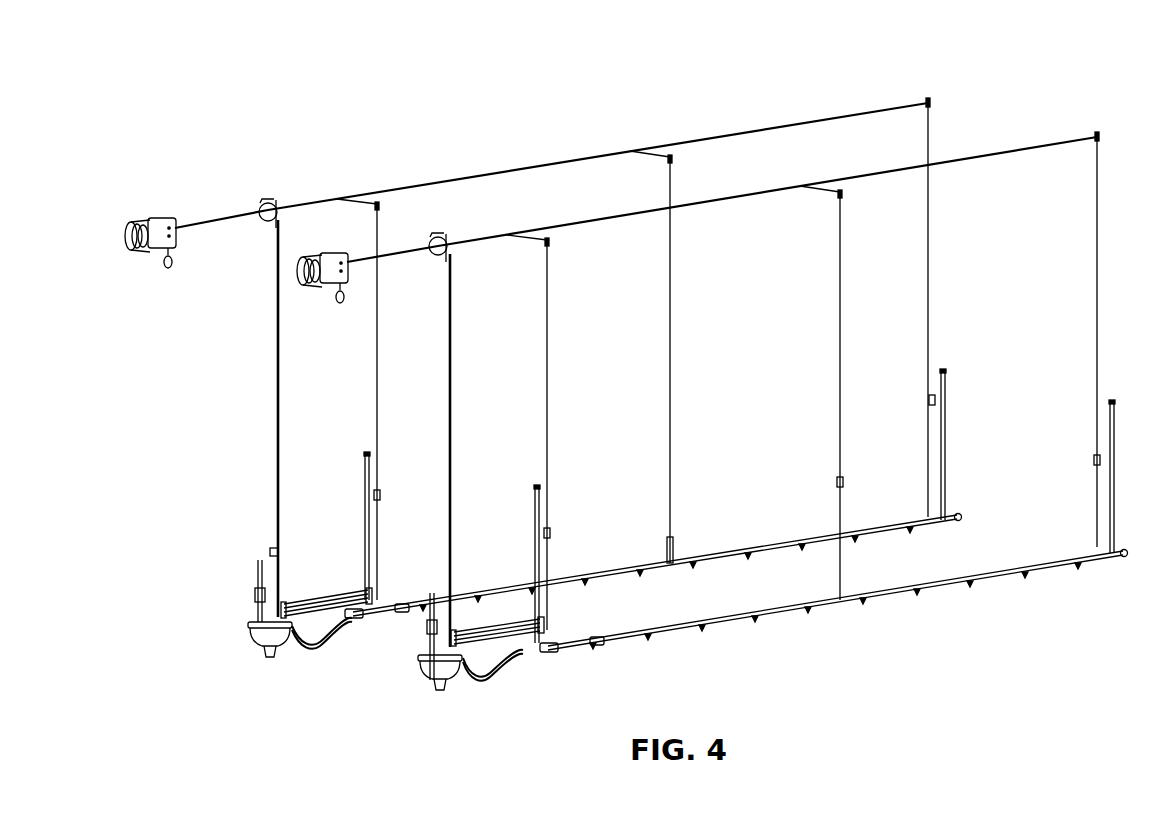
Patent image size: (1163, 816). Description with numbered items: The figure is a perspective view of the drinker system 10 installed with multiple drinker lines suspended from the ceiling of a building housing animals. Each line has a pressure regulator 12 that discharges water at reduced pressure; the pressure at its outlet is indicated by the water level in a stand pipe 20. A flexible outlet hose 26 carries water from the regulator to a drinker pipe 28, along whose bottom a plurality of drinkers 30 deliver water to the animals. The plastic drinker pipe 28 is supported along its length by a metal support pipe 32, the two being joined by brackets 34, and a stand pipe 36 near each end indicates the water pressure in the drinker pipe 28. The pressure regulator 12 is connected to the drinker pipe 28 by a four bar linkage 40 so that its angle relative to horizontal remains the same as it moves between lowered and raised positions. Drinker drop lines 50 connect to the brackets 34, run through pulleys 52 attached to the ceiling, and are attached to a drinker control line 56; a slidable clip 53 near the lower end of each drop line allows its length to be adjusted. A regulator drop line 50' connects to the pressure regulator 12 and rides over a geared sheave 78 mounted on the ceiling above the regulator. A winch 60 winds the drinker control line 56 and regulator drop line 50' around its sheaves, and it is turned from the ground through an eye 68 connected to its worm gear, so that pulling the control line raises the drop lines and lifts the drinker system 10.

The drinker system 10 is at (975, 664).
The pressure regulator 12 is at (250, 634).
The stand pipe 20 is at (272, 553).
The flexible outlet hose 26 is at (320, 647).
The drinker pipe 28 is at (797, 605).
The drinkers 30 is at (648, 640).
The support pipe 32 is at (766, 540).
The brackets 34 is at (373, 603).
The stand pipe 36 is at (366, 468).
The four bar linkage 40 is at (325, 586).
The drinker drop lines 50 is at (737, 367).
The regulator drop line 50' is at (344, 433).
The pulleys 52 is at (382, 206).
The slidable clip 53 is at (379, 497).
The drinker control line 56 is at (500, 172).
The winch 60 is at (160, 217).
The eye 68 is at (168, 272).
The geared sheave 78 is at (263, 200).